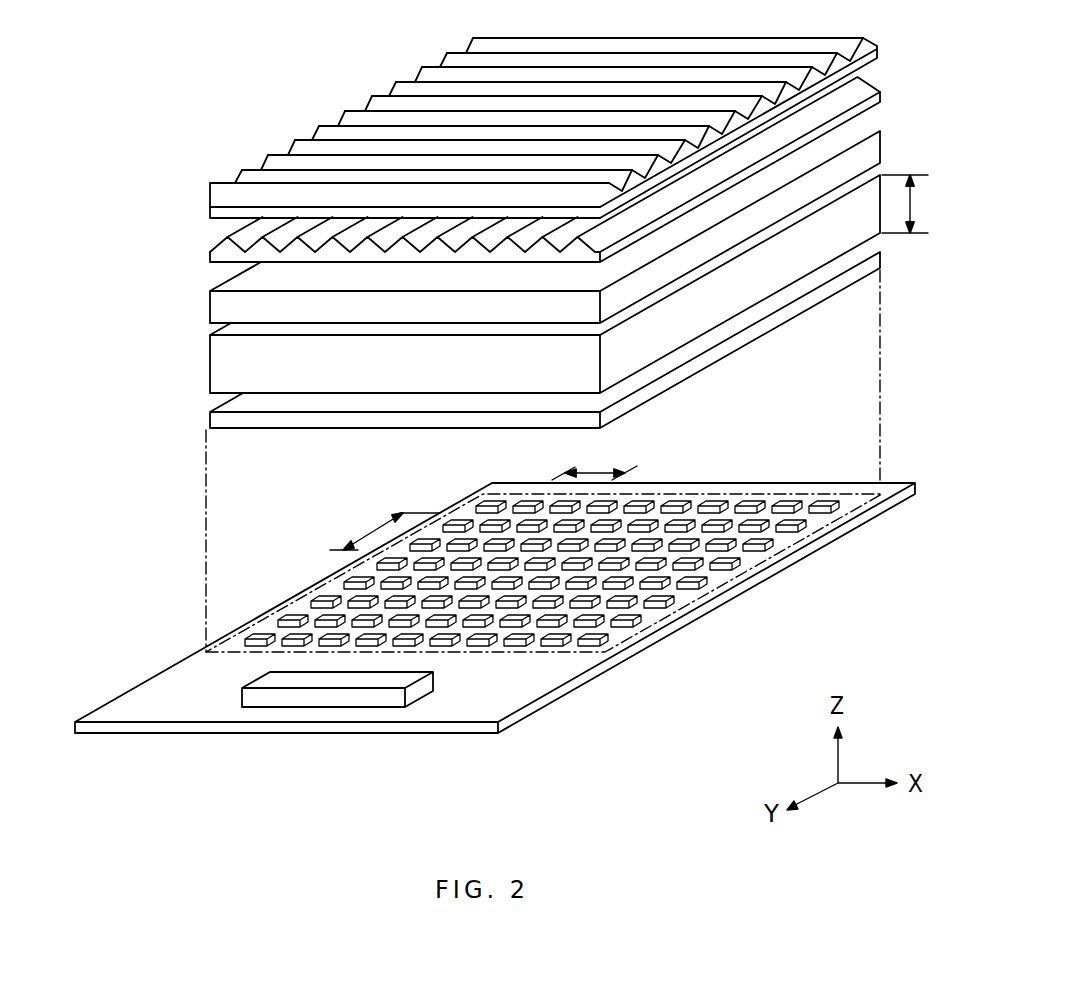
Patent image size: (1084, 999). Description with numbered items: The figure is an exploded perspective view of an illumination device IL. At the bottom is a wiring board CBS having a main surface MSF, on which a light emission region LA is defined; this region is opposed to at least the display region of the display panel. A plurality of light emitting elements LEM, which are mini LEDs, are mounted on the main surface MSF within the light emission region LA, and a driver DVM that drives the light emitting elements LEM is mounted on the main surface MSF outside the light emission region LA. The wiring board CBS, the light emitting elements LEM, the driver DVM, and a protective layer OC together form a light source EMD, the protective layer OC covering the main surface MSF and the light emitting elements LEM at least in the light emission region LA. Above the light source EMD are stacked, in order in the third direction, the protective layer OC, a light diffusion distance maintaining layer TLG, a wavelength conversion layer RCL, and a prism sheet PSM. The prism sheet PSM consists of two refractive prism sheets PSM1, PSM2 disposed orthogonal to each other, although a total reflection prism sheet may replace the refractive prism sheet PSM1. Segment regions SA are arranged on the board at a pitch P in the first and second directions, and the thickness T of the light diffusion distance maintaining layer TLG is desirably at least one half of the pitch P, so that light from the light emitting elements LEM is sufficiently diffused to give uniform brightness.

The illumination device IL is at (272, 108).
The prism sheet PSM is at (128, 167).
The refractive prism sheet PSM2 is at (213, 194).
The refractive prism sheet PSM1 is at (213, 250).
The wavelength conversion layer RCL is at (213, 304).
The light diffusion distance maintaining layer TLG is at (213, 359).
The protective layer OC is at (214, 419).
The thickness T is at (908, 204).
The light source EMD is at (731, 465).
The wiring board CBS is at (523, 742).
The main surface MSF is at (543, 674).
The light emission region LA is at (667, 640).
The segment region SA is at (233, 641).
The pitch P is at (483, 496).
The light emitting element LEM is at (284, 615).
The driver DVM is at (315, 703).